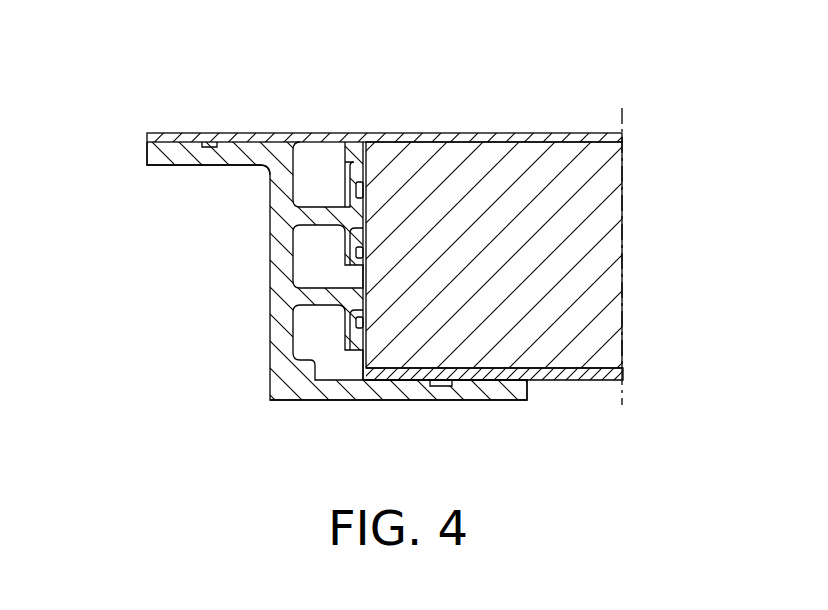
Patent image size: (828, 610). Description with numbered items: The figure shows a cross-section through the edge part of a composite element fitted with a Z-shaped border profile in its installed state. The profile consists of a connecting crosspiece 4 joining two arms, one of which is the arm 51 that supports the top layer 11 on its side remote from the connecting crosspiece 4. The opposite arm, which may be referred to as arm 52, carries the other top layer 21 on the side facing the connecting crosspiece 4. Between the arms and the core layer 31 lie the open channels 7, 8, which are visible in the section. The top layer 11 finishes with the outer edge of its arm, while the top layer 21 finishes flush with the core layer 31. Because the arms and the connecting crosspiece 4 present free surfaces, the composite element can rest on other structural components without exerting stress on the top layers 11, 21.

The connecting crosspiece 4 is at (277, 272).
The open channel 7 is at (324, 168).
The open channel 8 is at (318, 339).
The top layer 11 is at (440, 132).
The top layer 21 is at (567, 383).
The core layer 31 is at (570, 232).
The arm 51 is at (166, 155).
The lower flange 52 is at (468, 393).